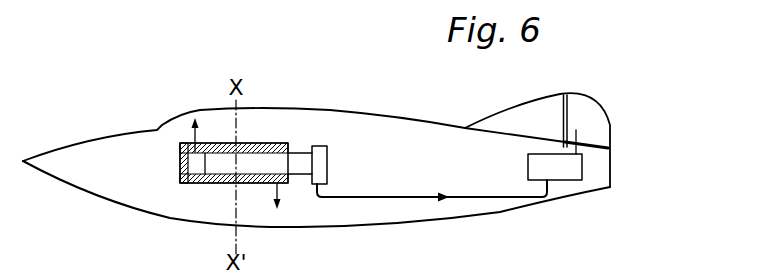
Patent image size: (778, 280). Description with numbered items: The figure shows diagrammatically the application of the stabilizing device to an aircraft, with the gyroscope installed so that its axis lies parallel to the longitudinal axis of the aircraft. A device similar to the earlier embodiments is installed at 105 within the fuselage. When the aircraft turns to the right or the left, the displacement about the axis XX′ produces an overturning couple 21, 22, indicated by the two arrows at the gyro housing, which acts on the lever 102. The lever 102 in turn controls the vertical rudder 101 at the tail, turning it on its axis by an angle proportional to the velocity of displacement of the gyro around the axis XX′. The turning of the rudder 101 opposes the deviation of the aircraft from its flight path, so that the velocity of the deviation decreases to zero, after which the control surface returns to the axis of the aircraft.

The overturning couple force 21 is at (291, 198).
The overturning couple force 22 is at (185, 135).
The vertical rudder 101 is at (587, 103).
The lever 102 is at (567, 135).
The stabilizing device 105 is at (528, 165).